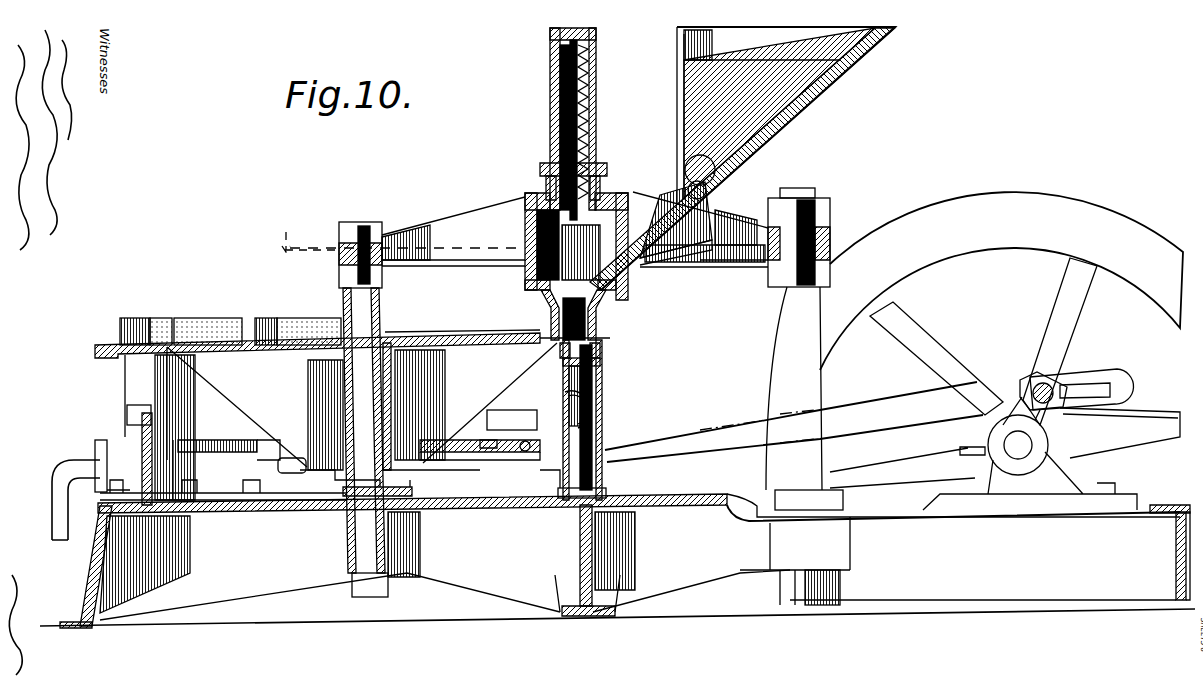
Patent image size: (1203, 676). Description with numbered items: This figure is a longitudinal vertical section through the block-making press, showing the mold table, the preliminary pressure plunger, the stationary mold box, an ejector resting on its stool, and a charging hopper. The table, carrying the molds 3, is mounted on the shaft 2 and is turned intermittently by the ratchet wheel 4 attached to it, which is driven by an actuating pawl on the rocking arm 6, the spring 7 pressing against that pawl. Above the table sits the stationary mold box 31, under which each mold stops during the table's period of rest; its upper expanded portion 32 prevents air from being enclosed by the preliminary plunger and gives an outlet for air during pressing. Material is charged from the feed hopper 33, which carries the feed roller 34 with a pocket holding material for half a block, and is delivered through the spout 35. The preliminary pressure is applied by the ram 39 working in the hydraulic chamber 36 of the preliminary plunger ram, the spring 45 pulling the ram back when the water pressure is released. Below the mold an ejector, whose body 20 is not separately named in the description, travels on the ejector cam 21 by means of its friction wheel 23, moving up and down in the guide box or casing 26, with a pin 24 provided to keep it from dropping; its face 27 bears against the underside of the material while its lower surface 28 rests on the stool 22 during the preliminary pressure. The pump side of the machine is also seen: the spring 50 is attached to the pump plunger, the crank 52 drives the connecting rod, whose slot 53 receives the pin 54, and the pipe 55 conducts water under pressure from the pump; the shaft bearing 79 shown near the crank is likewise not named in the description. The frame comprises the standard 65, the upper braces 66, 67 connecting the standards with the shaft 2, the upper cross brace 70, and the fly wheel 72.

The shaft 2 is at (362, 385).
The molds 3 is at (207, 318).
The ratchet wheel 4 is at (297, 484).
The rocking arm 6 is at (333, 503).
The spring 7 is at (218, 357).
The tube 20 is at (607, 387).
The ejector cam 21 is at (127, 430).
The stool 22 is at (553, 477).
The friction wheels 23 is at (123, 413).
The pins 24 is at (165, 368).
The guide boxes or casings 26 is at (128, 395).
The face of the ejector 27 is at (142, 318).
The lower surface of the ejector 28 is at (600, 440).
The stationary mold box 31 is at (605, 322).
The upper expanded portion of the stationary mold 32 is at (607, 299).
The feed hopper 33 is at (812, 110).
The feed roller 34 is at (732, 172).
The spout 35 is at (673, 192).
The hydraulic chamber of the preliminary plunger ram 36 is at (560, 107).
The ram 39 is at (593, 120).
The spring 45 is at (596, 70).
The spring 50 is at (280, 470).
The crank 52 is at (1117, 410).
The slot 53 is at (1100, 367).
The pin 54 is at (1052, 390).
The pipe 55 is at (72, 490).
The standard 65 is at (788, 322).
The upper brace 66 is at (477, 197).
The upper brace 67 is at (693, 260).
The upper cross brace 70 is at (580, 553).
The fly wheel 72 is at (962, 207).
The shaft bearing 79 is at (1027, 457).